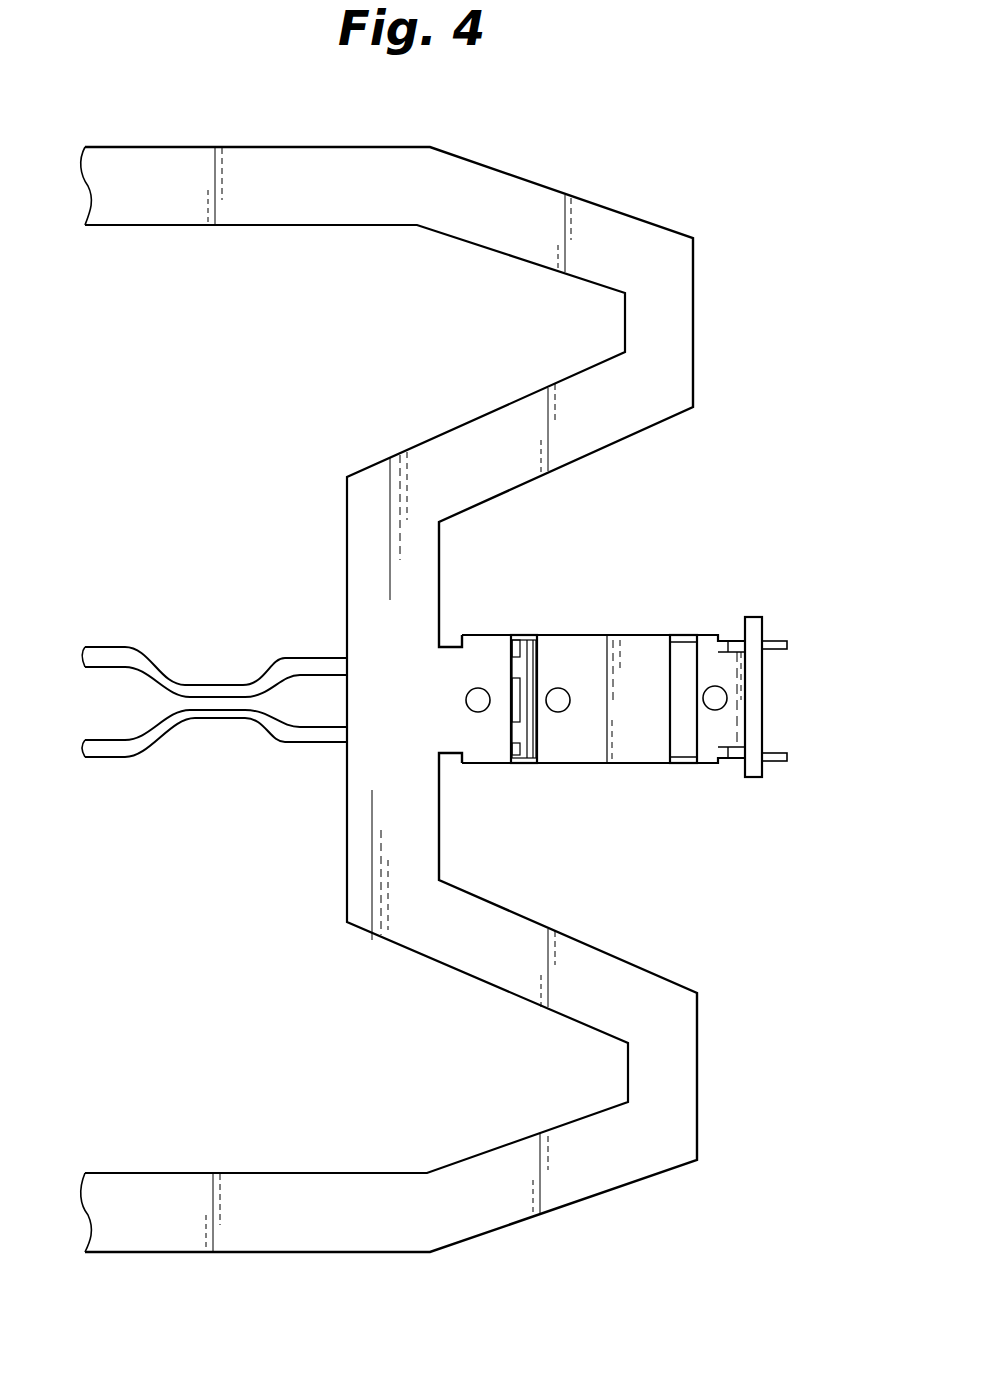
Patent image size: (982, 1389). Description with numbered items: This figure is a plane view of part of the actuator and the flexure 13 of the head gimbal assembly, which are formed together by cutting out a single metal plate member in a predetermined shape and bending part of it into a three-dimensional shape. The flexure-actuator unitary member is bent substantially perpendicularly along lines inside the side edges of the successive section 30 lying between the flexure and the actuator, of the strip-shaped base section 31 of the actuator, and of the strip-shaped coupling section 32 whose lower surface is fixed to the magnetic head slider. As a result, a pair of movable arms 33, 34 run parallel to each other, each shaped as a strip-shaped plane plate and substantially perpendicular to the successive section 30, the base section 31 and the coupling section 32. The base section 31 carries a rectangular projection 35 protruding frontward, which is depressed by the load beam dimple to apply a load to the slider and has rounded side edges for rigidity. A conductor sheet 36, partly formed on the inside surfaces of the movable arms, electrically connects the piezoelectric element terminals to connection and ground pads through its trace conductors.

The flexure 13 is at (462, 445).
The successive section 30 is at (483, 765).
The base section 31 is at (570, 765).
The coupling section 32 is at (710, 765).
The movable arm 33 is at (682, 765).
The movable arm 34 is at (680, 630).
The rectangular projection 35 is at (635, 765).
The conductor sheet 36 is at (257, 686).